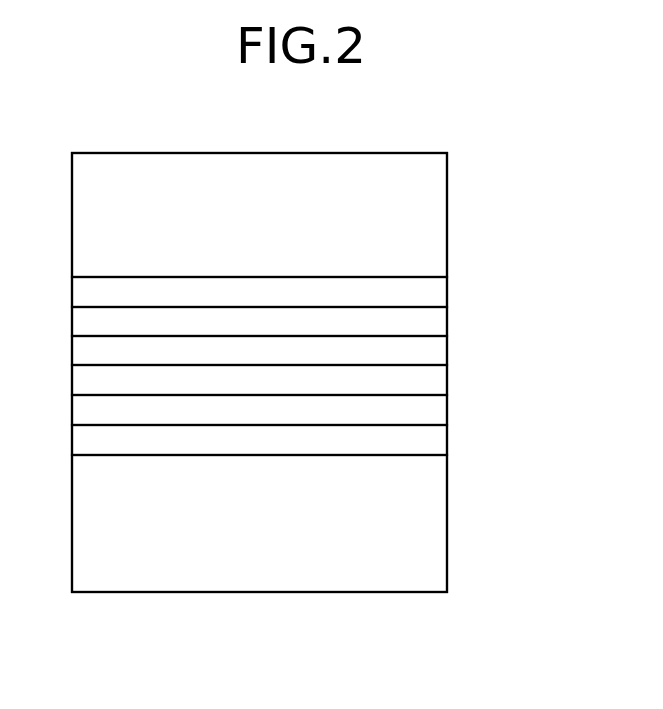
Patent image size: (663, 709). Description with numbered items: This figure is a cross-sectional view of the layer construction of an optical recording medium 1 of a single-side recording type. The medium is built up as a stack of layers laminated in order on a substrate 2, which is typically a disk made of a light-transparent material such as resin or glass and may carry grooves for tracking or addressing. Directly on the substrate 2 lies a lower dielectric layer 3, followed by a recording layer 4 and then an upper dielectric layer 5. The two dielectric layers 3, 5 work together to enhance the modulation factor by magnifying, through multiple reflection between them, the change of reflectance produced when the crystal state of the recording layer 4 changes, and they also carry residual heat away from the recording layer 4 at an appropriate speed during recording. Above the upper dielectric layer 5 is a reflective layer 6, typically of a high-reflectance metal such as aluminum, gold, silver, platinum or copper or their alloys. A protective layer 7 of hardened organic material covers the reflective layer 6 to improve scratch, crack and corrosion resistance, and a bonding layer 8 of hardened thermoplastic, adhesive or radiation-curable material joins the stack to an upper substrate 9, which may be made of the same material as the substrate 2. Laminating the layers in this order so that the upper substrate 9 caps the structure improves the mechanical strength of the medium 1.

The optical recording medium 1 is at (246, 593).
The substrate 2 is at (363, 497).
The lower dielectric layer 3 is at (363, 445).
The recording layer 4 is at (363, 415).
The upper dielectric layer 5 is at (363, 385).
The reflective layer 6 is at (363, 356).
The protective layer 7 is at (363, 327).
The bonding layer 8 is at (363, 297).
The upper substrate 9 is at (363, 237).